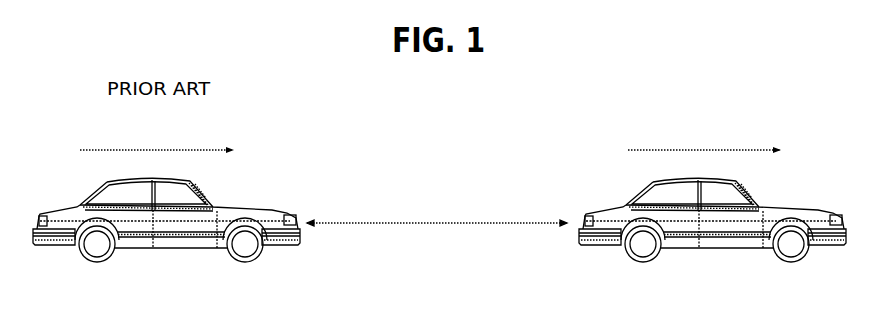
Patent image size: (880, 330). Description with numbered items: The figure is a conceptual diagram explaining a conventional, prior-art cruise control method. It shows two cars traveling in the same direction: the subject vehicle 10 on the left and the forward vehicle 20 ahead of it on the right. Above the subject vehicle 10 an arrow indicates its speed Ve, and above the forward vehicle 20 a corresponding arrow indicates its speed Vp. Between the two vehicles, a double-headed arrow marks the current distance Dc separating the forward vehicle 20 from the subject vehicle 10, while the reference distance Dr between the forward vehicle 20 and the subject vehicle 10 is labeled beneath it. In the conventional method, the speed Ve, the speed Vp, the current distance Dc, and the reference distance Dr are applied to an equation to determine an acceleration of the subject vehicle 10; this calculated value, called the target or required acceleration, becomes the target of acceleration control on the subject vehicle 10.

The subject vehicle 10 is at (168, 243).
The forward vehicle 20 is at (713, 243).
The speed of the subject vehicle Ve is at (157, 136).
The speed of the forward vehicle Vp is at (705, 135).
The current distance Dc is at (437, 211).
The reference distance Dr is at (436, 295).